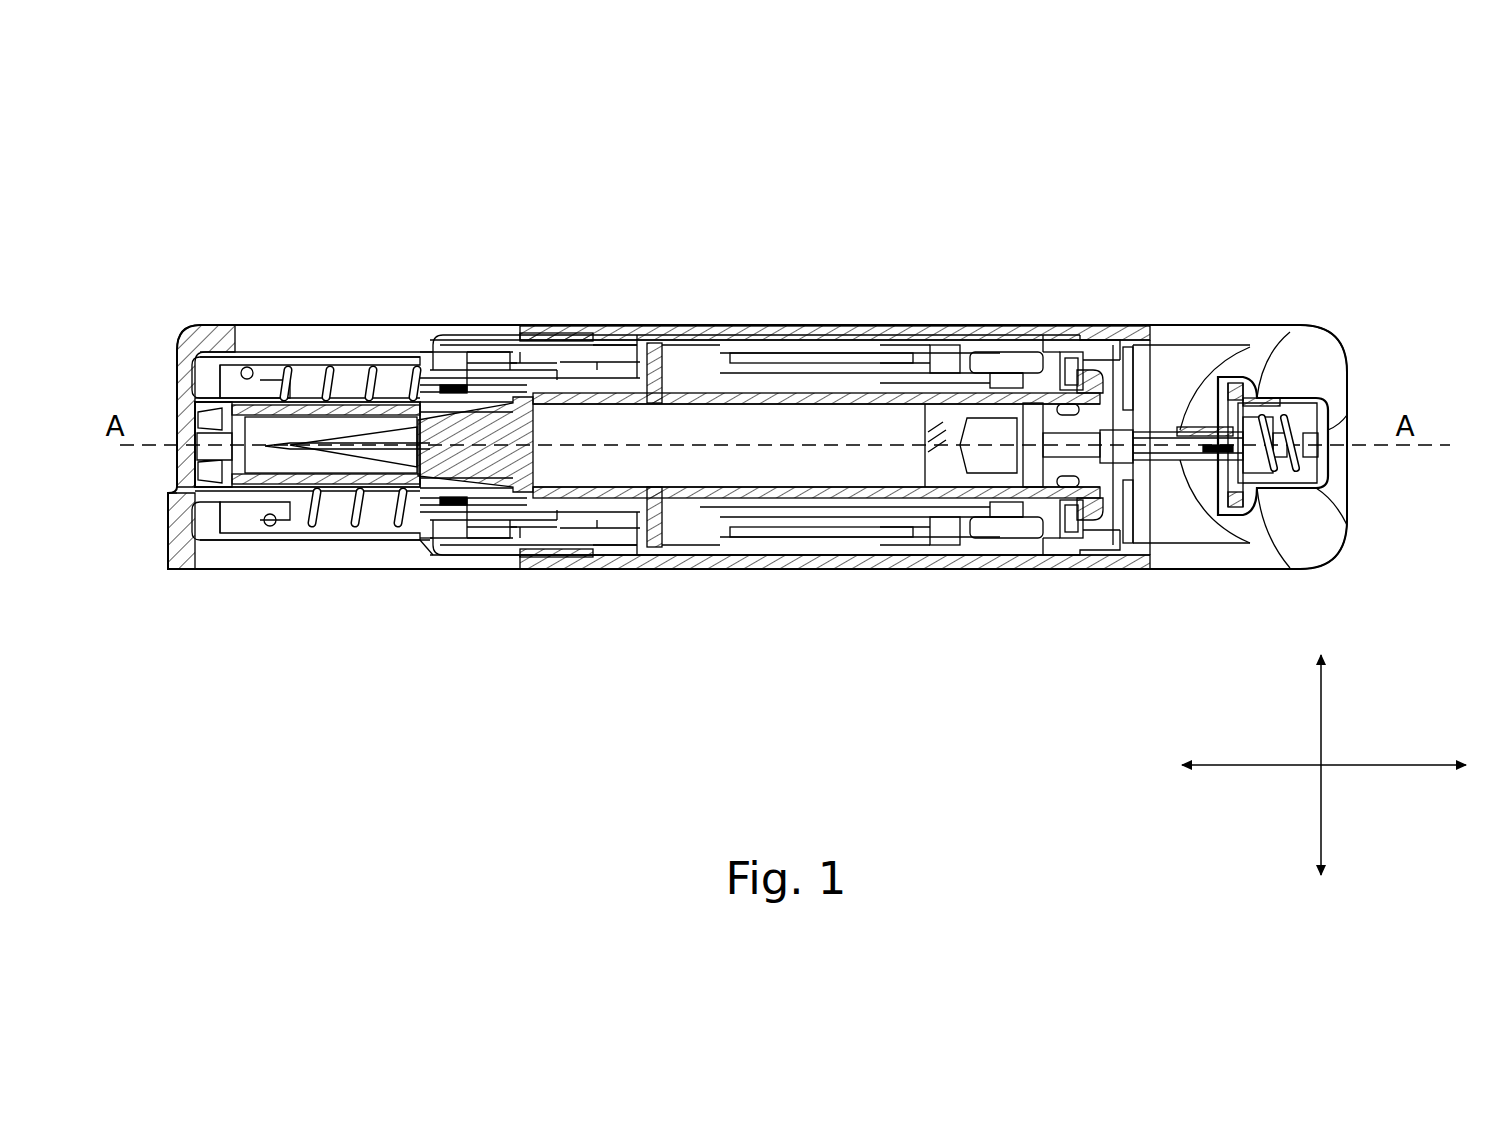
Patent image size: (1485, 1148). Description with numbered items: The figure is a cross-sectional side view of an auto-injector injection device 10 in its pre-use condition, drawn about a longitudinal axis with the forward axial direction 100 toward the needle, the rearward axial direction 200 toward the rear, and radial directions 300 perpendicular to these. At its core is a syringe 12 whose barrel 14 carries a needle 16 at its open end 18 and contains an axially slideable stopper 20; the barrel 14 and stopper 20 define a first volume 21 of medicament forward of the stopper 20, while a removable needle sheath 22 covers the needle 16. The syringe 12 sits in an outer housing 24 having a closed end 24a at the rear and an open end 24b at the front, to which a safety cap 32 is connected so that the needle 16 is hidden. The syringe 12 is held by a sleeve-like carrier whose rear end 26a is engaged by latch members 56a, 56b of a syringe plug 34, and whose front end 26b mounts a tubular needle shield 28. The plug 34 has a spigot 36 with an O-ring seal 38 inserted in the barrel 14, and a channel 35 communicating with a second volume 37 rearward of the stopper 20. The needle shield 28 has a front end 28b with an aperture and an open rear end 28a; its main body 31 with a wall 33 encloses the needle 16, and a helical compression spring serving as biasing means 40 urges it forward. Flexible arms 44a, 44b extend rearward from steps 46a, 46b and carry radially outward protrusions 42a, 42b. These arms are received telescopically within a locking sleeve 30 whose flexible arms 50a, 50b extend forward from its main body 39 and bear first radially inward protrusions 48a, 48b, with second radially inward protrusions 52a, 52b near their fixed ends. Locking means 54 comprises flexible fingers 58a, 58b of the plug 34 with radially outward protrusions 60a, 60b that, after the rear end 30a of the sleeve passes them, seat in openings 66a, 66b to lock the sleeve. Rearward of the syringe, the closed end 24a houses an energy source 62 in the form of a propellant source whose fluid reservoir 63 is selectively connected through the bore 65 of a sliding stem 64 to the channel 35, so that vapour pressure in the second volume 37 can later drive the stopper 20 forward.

The injection device 10 is at (993, 172).
The syringe 12 is at (847, 325).
The barrel 14 is at (860, 500).
The needle 16 is at (275, 445).
The open end 18 is at (300, 487).
The stopper 20 is at (923, 440).
The first volume 21 is at (758, 463).
The removable needle sheath 22 is at (330, 385).
The outer housing 24 is at (813, 325).
The closed end 24a is at (1305, 325).
The open end 24b is at (478, 325).
The rear end 26a is at (1120, 560).
The front end 26b is at (393, 560).
The needle shield 28 is at (197, 560).
The rear end 28a is at (655, 345).
The front end 28b is at (200, 350).
The locking sleeve 30 is at (733, 325).
The rear end 30a is at (1000, 350).
The main body 31 is at (265, 540).
The safety cap 32 is at (165, 530).
The wall 33 is at (255, 352).
The syringe plug 34 is at (1165, 345).
The channel 35 is at (1128, 545).
The spigot 36 is at (1093, 560).
The second volume 37 is at (885, 350).
The seal 38 is at (1130, 360).
The main body 39 is at (720, 567).
The biasing means 40 is at (300, 487).
The radially outward protrusion 42a is at (580, 332).
The radially outward protrusion 42b is at (573, 560).
The flexible arm 44a is at (490, 355).
The flexible arm 44b is at (473, 560).
The step 46a is at (412, 360).
The step 46b is at (410, 520).
The first radially inward protrusion 48a is at (525, 350).
The first radially inward protrusion 48b is at (527, 560).
The flexible arm 50a is at (620, 332).
The flexible arm 50b is at (620, 560).
The second radially inward protrusion 52a is at (672, 330).
The second radially inward protrusion 52b is at (673, 560).
The locking means 54 is at (962, 320).
The latch member 56a is at (1085, 360).
The latch member 56b is at (1117, 560).
The flexible finger 58a is at (1045, 355).
The flexible finger 58b is at (1037, 560).
The radially outward protrusion 60a is at (985, 350).
The radially outward protrusion 60b is at (987, 560).
The energy source 62 is at (1327, 430).
The fluid reservoir 63 is at (1303, 497).
The stem 64 is at (1230, 520).
The bore 65 is at (1205, 400).
The opening 66a is at (950, 345).
The opening 66b is at (933, 560).
The forward axial direction 100 is at (1324, 745).
The rearward axial direction 200 is at (1434, 783).
The radial directions 300 is at (1318, 771).